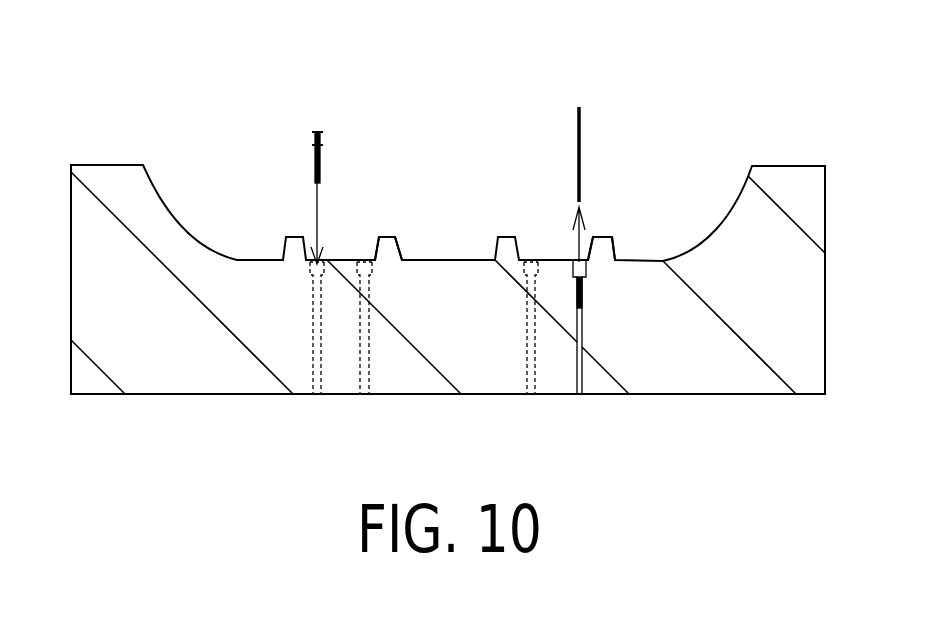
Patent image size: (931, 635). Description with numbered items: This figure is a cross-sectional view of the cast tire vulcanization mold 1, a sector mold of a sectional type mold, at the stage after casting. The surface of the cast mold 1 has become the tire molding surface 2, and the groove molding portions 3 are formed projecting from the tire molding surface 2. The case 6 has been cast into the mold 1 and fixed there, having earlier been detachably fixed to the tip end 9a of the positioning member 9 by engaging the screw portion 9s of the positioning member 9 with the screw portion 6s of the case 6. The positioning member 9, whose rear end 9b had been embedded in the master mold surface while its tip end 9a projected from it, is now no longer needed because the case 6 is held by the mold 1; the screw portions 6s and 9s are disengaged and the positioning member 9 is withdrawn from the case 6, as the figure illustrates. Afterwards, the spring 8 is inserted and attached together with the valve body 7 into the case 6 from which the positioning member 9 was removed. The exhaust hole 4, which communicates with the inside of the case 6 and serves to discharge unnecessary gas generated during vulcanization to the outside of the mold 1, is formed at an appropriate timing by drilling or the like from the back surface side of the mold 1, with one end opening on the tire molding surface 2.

The tire vulcanization mold 1 is at (777, 166).
The tire molding surface 2 is at (253, 258).
The groove molding portion 3 is at (390, 237).
The exhaust hole 4 is at (362, 356).
The case 6 is at (313, 283).
The screw portion 6s is at (582, 299).
The valve body 7 is at (313, 140).
The spring 8 is at (318, 160).
The positioning member 9 is at (581, 148).
The tip end 9a is at (578, 195).
The rear end 9b is at (577, 115).
The screw portion 9s is at (580, 193).